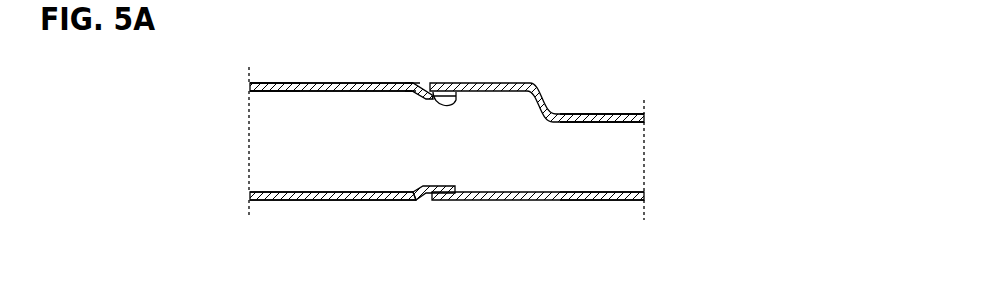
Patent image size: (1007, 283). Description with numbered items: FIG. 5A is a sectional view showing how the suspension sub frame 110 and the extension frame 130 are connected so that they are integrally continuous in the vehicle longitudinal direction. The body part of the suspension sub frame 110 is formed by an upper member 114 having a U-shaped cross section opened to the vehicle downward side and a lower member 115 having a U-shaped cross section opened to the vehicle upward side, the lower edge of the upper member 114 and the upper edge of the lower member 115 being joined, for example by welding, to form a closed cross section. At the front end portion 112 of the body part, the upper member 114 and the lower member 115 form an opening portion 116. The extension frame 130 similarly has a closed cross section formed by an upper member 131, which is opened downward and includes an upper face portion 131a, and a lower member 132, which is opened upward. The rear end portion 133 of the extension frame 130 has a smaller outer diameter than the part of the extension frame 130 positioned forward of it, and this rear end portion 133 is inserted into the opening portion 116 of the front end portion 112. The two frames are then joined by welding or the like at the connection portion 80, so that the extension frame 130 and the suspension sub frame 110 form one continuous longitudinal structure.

The suspension sub frame 110 is at (619, 204).
The front end portion 112 is at (469, 79).
The upper member 114 is at (592, 112).
The lower member 115 is at (507, 201).
The opening portion 116 is at (428, 82).
The extension frame 130 is at (273, 204).
The upper member 131 is at (327, 82).
The upper face portion 131a is at (285, 82).
The lower member 132 is at (327, 201).
The rear end portion 133 is at (432, 201).
The connection portion 80 is at (404, 71).